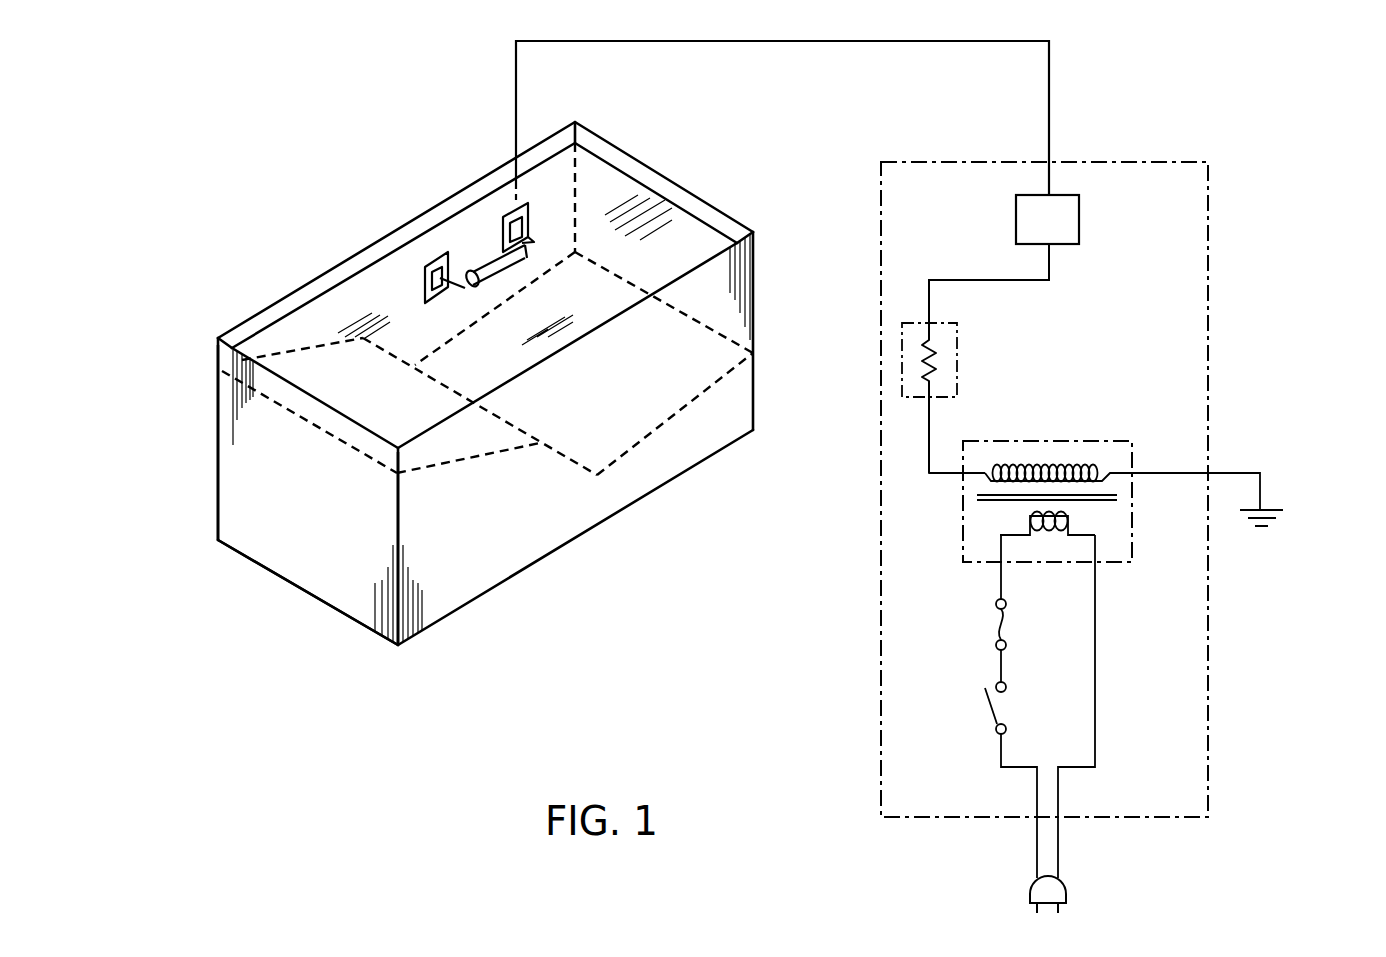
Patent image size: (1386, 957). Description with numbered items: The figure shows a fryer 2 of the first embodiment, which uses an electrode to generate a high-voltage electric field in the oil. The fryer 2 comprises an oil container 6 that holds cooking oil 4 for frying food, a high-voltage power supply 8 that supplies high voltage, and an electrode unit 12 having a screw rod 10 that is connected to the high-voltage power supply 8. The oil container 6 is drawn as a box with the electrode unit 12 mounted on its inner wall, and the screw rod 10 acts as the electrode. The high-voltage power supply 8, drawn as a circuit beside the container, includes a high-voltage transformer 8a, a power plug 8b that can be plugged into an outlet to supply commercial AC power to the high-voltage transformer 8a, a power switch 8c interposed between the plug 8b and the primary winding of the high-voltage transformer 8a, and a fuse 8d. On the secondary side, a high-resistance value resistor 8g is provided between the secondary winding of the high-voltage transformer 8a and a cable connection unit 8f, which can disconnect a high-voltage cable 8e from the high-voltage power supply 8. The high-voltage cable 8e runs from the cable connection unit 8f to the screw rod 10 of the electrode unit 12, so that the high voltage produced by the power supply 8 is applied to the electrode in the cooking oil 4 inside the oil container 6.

The fryer 2 is at (608, 552).
The cooking oil 4 is at (387, 292).
The oil container 6 is at (307, 540).
The high-voltage power supply 8 is at (1208, 273).
The high-voltage transformer 8a is at (1072, 440).
The power plug 8b is at (1030, 884).
The power switch 8c is at (992, 708).
The fuse 8d is at (995, 630).
The high-voltage cable 8e is at (797, 43).
The cable connection unit 8f is at (1079, 218).
The high-resistance value resistor 8g is at (957, 352).
The screw rod 10 is at (497, 262).
The electrode unit 12 is at (462, 238).